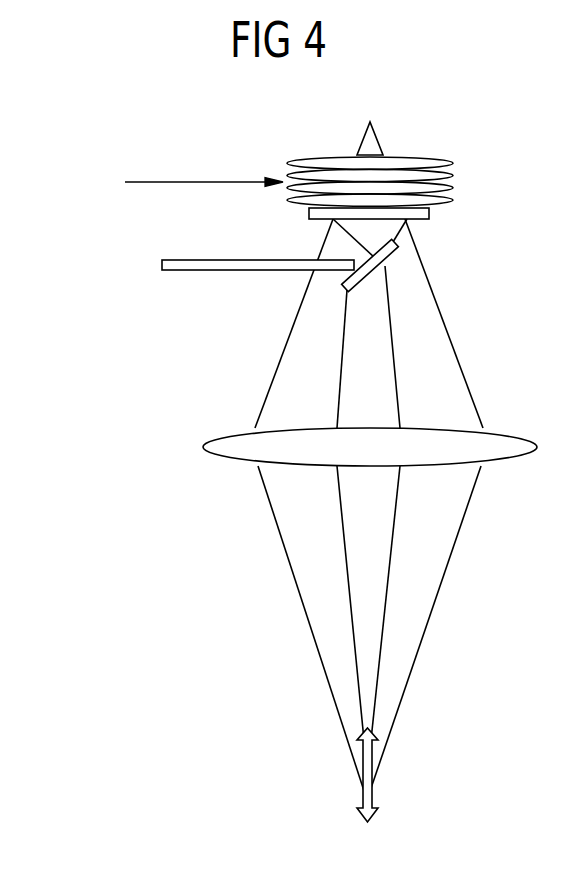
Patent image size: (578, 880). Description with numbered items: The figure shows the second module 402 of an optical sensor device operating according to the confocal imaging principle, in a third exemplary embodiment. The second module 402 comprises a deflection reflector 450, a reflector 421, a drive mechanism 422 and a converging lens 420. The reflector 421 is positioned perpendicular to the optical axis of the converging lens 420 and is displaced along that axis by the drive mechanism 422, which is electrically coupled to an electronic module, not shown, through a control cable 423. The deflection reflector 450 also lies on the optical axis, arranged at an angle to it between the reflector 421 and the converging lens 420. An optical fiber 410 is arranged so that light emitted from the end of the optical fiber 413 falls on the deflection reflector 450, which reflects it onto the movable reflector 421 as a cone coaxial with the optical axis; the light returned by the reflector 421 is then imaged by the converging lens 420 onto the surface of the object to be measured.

The second module 402 is at (419, 126).
The drive mechanism 422 is at (452, 168).
The reflector 421 is at (309, 216).
The control cable 423 is at (195, 180).
The optical fiber 410 is at (188, 270).
The deflection reflector 450 is at (343, 288).
The end of the optical fiber 413 is at (384, 265).
The converging lens 420 is at (203, 446).